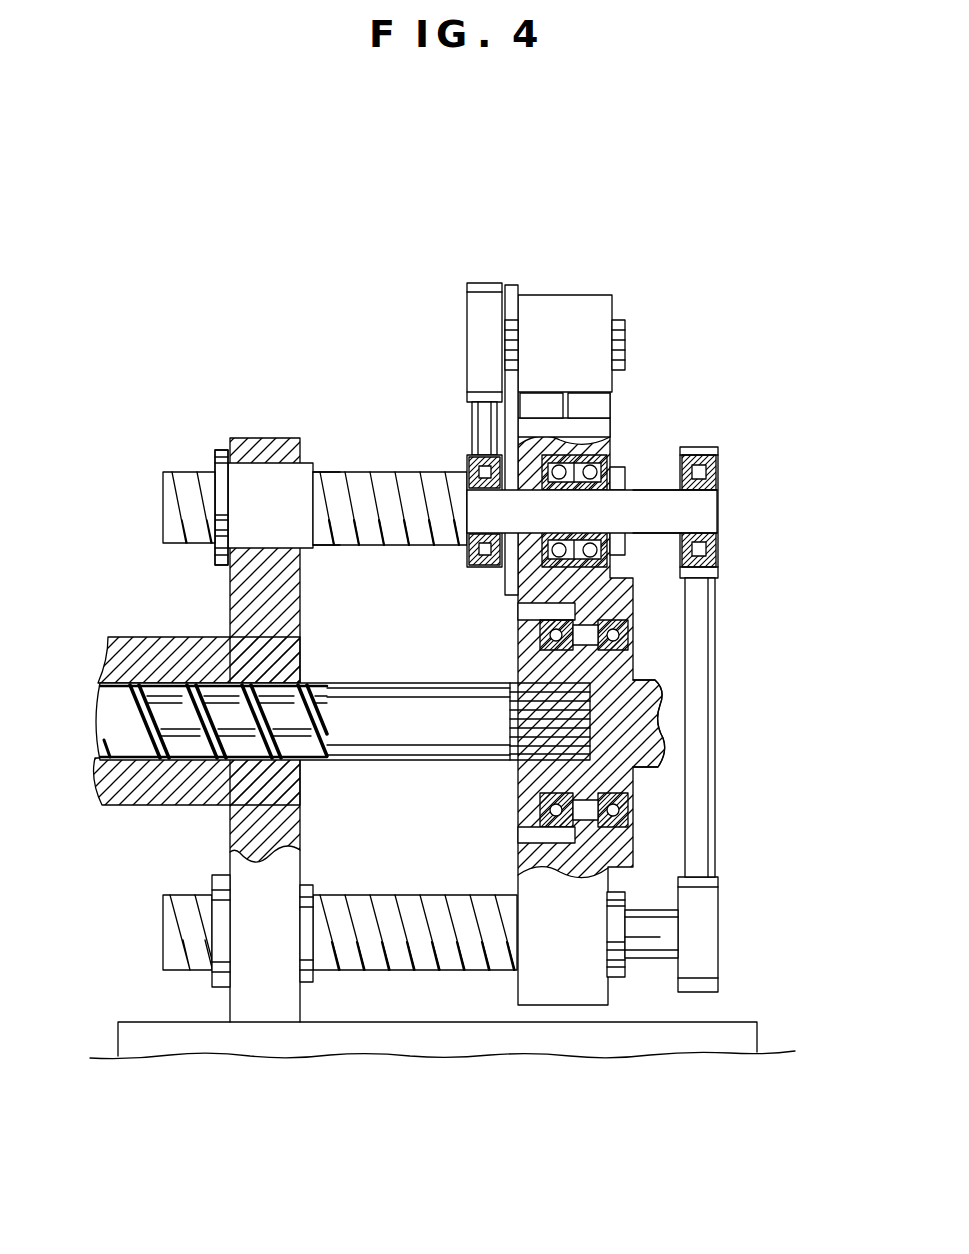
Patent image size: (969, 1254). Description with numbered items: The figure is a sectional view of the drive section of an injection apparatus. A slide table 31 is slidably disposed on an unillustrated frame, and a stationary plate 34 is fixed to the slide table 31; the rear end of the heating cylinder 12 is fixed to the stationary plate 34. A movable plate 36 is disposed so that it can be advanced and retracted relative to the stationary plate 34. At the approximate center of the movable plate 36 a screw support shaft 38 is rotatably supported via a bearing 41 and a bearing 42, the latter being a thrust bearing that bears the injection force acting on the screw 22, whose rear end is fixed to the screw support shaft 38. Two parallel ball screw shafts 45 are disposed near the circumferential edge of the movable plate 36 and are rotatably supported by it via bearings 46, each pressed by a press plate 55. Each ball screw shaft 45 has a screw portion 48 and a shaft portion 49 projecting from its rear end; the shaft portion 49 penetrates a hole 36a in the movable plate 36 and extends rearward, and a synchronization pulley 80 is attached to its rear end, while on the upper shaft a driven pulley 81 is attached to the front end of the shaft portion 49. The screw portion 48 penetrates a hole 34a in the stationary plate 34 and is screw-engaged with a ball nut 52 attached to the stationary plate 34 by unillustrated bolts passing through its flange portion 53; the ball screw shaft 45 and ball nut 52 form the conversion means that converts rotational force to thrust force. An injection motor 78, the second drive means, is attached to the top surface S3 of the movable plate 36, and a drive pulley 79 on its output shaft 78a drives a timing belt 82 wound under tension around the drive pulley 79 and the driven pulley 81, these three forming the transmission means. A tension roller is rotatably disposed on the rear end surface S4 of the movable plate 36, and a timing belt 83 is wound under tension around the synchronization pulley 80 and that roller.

The heating cylinder 12 is at (118, 637).
The screw 22 is at (130, 745).
The slide table 31 is at (400, 1046).
The stationary plate 34 is at (270, 430).
The hole 34a is at (284, 478).
The movable plate 36 is at (612, 412).
The hole 36a is at (545, 490).
The screw support shaft 38 is at (540, 640).
The bearing 41 is at (634, 828).
The bearing 42 is at (540, 828).
The ball screw shaft 45 is at (378, 462).
The bearing 46 is at (618, 450).
The screw portion 48 is at (338, 471).
The shaft portion 49 is at (712, 517).
The ball nut 52 is at (249, 472).
The flange portion 53 is at (216, 452).
The press plate 55 is at (632, 470).
The injection motor 78 is at (555, 285).
The output shaft 78a is at (510, 325).
The drive pulley 79 is at (467, 290).
The synchronization pulley 80 is at (720, 455).
The driven pulley 81 is at (468, 565).
The timing belt 82 is at (472, 440).
The timing belt 83 is at (715, 710).
The top surface S3 is at (577, 415).
The rear end surface S4 is at (631, 884).